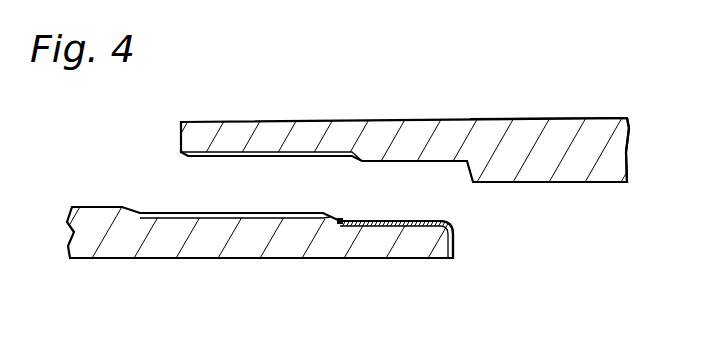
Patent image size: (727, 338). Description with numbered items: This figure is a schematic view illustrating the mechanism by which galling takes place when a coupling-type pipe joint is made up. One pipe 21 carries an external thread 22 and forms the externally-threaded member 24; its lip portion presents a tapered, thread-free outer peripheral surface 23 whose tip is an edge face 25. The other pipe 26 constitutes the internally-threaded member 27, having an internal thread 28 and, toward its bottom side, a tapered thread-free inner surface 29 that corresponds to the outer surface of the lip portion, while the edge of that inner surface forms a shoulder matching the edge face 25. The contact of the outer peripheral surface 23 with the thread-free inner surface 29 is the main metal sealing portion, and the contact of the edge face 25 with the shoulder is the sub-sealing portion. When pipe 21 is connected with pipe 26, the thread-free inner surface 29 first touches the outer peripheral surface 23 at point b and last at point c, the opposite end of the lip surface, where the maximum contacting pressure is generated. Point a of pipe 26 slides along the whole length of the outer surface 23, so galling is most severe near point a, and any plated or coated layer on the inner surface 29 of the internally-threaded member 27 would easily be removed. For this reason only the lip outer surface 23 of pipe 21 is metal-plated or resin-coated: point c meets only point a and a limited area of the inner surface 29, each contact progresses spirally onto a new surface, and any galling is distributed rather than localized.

The pipe 21 is at (105, 248).
The external thread 22 is at (190, 228).
The lip portion outer peripheral surface 23 is at (397, 222).
The externally-threaded member 24 is at (283, 250).
The edge face 25 is at (456, 249).
The pipe 26 is at (535, 132).
The internally-threaded member 27 is at (405, 128).
The internal thread 28 is at (257, 156).
The thread-free inner surface 29 is at (422, 165).
The point a is at (365, 163).
The point b is at (441, 223).
The point c is at (338, 217).